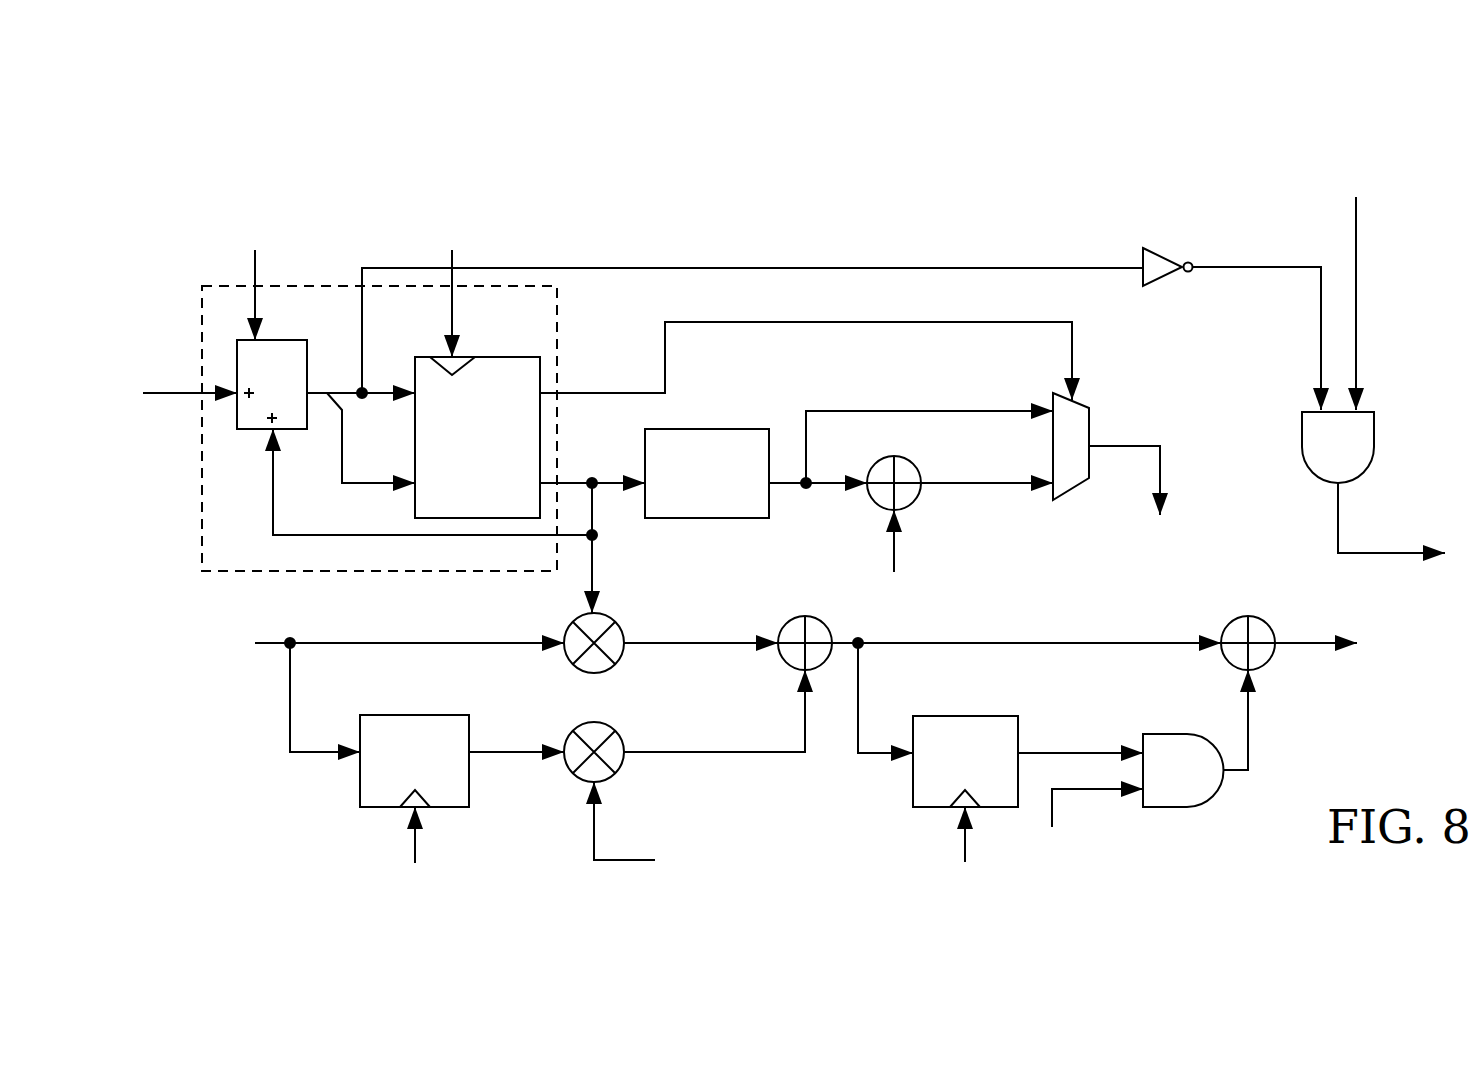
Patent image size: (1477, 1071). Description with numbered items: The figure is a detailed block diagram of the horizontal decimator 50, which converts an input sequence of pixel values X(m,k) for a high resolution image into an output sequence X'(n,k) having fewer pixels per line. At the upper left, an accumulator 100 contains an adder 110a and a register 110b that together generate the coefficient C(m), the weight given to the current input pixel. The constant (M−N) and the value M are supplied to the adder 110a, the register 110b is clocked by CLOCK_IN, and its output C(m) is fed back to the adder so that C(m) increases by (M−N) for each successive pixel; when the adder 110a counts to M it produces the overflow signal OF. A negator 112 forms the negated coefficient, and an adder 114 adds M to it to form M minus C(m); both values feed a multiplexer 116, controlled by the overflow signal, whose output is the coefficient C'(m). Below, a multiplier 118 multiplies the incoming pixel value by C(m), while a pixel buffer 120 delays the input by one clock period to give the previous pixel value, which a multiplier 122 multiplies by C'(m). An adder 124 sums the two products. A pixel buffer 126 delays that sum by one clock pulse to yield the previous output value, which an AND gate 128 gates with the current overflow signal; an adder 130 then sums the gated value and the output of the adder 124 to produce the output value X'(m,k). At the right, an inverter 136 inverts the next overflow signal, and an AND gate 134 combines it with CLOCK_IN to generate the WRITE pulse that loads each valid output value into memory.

The horizontal decimator 50 is at (310, 123).
The accumulator 100 is at (290, 285).
The adder 110a is at (291, 338).
The register 110b is at (477, 437).
The negator 112 is at (712, 520).
The adder 114 is at (913, 502).
The multiplexer 116 is at (1091, 428).
The multiplier 118 is at (570, 665).
The pixel buffer 120 is at (400, 714).
The multiplier 122 is at (602, 724).
The adder 124 is at (780, 664).
The pixel buffer 126 is at (951, 716).
The AND gate 128 is at (1190, 810).
The adder 130 is at (1225, 628).
The AND gate 134 is at (1300, 433).
The inverter 136 is at (1162, 256).